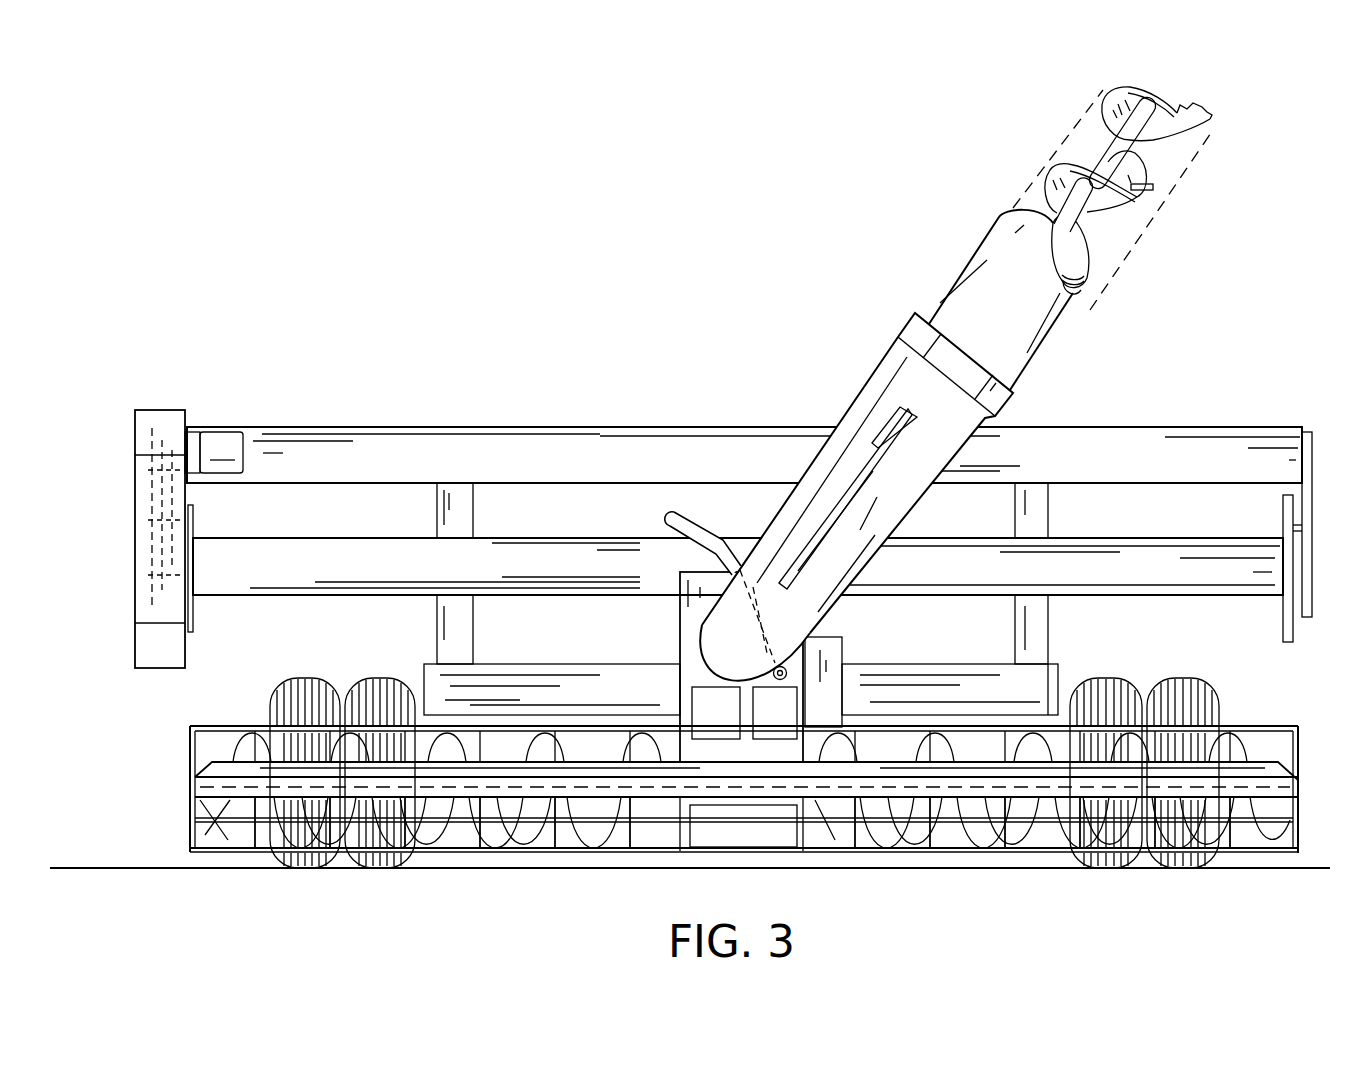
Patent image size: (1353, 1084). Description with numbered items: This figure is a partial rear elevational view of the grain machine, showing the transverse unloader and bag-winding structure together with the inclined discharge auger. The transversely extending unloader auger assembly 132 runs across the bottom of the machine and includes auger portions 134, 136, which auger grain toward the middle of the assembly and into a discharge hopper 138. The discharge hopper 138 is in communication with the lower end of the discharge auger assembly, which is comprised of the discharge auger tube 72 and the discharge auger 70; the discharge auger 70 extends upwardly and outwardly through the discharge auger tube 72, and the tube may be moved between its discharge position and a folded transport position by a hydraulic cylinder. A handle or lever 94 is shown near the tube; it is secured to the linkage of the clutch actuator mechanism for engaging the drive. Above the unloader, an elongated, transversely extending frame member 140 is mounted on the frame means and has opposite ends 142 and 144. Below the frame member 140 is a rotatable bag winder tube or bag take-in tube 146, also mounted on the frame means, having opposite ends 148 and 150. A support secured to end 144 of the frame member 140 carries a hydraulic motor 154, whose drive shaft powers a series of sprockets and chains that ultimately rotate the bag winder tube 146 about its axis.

The discharge auger 70 is at (1153, 187).
The discharge auger tube 72 is at (923, 457).
The handle or lever 94 is at (697, 528).
The unloader auger assembly 132 is at (1005, 858).
The auger portion 134 is at (490, 740).
The auger portion 136 is at (930, 760).
The discharge hopper 138 is at (787, 670).
The frame member 140 is at (628, 440).
The end of frame member 142 is at (1302, 432).
The end of frame member 144 is at (190, 415).
The bag winder tube 146 is at (1145, 568).
The end of bag winder tube 148 is at (1281, 616).
The end of bag winder tube 150 is at (197, 600).
The hydraulic motor 154 is at (227, 442).